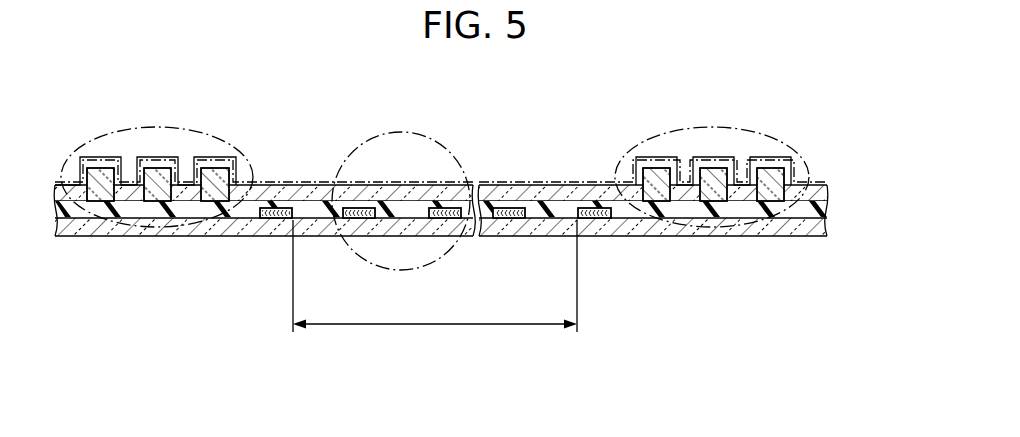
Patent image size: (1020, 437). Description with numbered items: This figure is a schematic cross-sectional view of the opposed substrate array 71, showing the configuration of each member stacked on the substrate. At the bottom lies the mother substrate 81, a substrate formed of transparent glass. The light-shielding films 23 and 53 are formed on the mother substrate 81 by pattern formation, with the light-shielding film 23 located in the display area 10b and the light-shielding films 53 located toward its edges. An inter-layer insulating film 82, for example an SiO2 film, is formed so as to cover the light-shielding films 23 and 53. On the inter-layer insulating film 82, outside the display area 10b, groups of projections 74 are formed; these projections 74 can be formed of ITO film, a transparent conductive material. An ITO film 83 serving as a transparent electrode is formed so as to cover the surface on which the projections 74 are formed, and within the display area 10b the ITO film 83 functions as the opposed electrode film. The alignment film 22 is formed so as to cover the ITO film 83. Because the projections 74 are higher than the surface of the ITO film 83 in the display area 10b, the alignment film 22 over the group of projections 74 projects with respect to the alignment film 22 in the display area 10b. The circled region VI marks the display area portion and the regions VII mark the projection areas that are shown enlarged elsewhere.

The opposed substrate array 71 is at (493, 208).
The ITO film 83 is at (827, 190).
The inter-layer insulating film 82 is at (827, 204).
The mother substrate 81 is at (471, 233).
The projections 74 is at (210, 170).
The alignment film 22 is at (825, 185).
The light-shielding film 53 is at (280, 207).
The light-shielding film 23 is at (437, 207).
The display area 10b is at (423, 325).
The line VI is at (438, 138).
The line VII is at (224, 140).